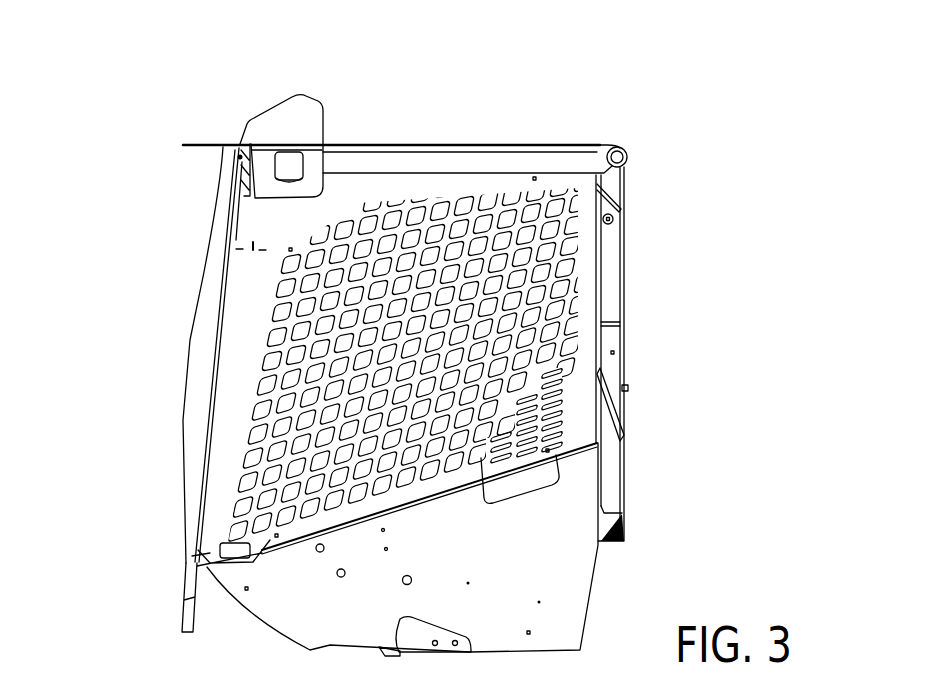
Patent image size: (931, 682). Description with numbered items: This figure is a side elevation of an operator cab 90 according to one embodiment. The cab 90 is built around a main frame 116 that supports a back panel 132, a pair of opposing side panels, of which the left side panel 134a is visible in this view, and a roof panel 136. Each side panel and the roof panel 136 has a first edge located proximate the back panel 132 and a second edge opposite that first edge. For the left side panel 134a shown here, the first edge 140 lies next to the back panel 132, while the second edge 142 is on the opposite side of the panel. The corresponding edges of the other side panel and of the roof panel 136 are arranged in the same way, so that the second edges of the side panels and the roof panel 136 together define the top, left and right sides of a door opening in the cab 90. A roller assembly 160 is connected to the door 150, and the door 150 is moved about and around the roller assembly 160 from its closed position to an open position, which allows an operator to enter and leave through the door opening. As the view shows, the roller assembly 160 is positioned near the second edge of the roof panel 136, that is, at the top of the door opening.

The cab 90 is at (624, 76).
The main frame 116 is at (256, 103).
The roller assembly 160 is at (296, 96).
The left side panel 134a is at (403, 187).
The roof panel 136 is at (527, 144).
The back panel 132 is at (625, 262).
The first edge 140 is at (598, 288).
The door 150 is at (210, 262).
The second edge 142 is at (218, 341).